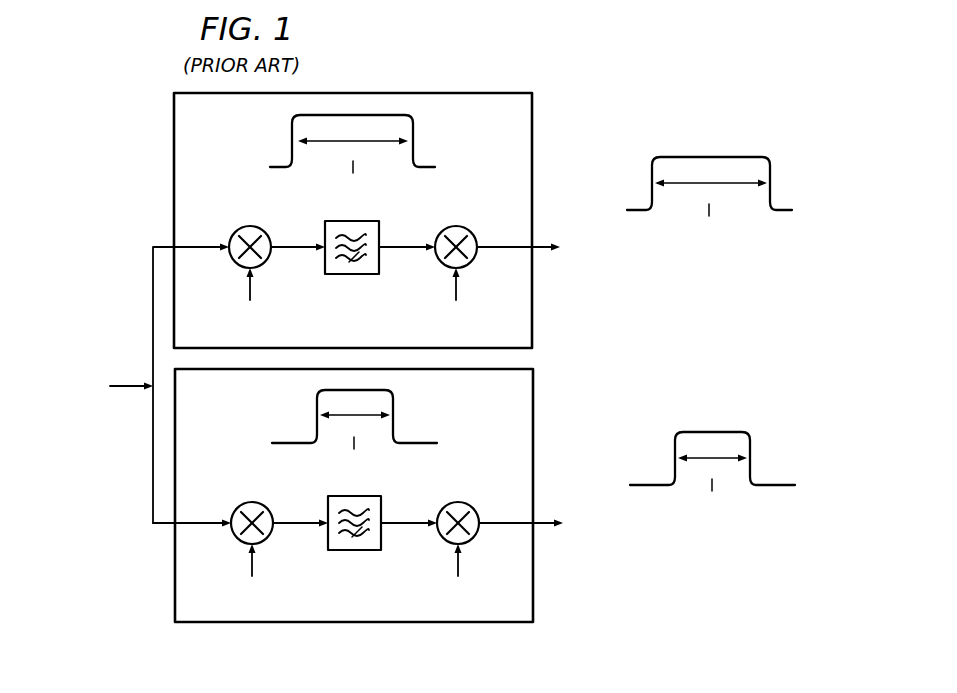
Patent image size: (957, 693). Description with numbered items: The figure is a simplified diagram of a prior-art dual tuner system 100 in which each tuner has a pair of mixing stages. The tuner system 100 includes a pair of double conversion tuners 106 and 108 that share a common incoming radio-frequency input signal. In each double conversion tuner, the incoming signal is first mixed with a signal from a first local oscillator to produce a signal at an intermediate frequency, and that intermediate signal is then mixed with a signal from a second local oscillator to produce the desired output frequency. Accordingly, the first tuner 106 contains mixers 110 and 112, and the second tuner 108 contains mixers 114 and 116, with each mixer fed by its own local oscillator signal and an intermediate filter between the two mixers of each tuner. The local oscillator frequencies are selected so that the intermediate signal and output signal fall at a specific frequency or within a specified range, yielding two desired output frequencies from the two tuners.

The tuner system 100 is at (672, 98).
The double conversion tuner 106 is at (173, 144).
The double conversion tuner 108 is at (176, 572).
The mixer 110 is at (240, 226).
The mixer 112 is at (465, 226).
The mixer 114 is at (242, 502).
The mixer 116 is at (465, 502).